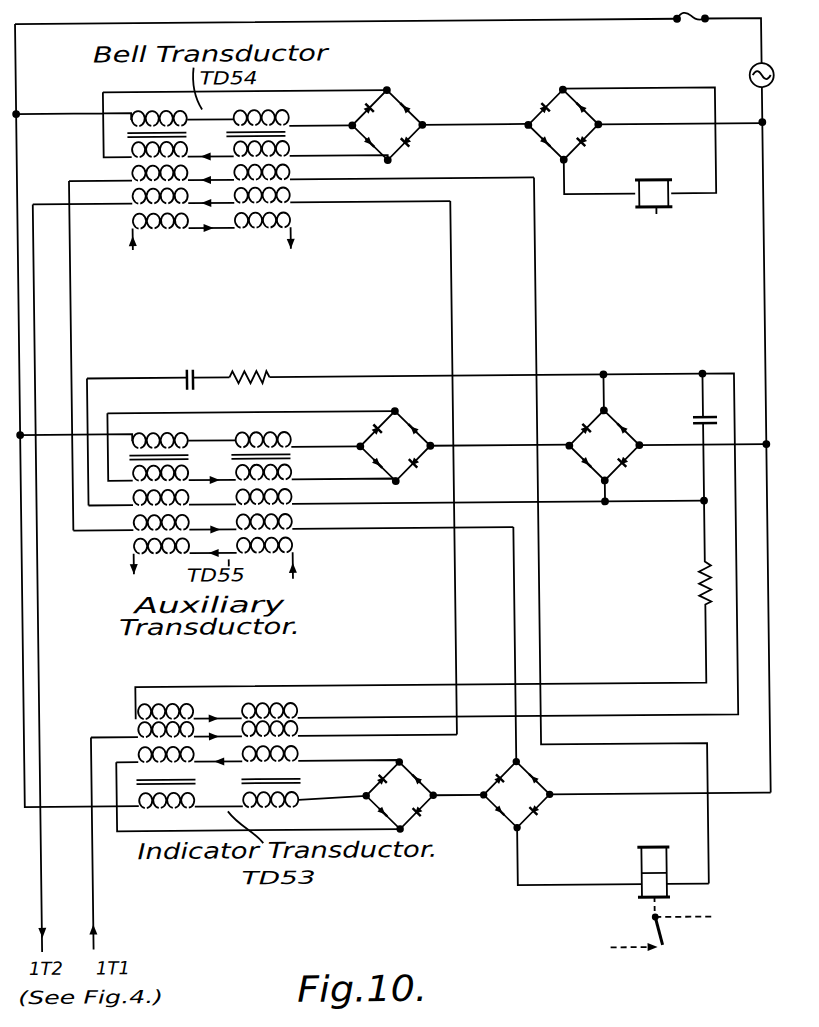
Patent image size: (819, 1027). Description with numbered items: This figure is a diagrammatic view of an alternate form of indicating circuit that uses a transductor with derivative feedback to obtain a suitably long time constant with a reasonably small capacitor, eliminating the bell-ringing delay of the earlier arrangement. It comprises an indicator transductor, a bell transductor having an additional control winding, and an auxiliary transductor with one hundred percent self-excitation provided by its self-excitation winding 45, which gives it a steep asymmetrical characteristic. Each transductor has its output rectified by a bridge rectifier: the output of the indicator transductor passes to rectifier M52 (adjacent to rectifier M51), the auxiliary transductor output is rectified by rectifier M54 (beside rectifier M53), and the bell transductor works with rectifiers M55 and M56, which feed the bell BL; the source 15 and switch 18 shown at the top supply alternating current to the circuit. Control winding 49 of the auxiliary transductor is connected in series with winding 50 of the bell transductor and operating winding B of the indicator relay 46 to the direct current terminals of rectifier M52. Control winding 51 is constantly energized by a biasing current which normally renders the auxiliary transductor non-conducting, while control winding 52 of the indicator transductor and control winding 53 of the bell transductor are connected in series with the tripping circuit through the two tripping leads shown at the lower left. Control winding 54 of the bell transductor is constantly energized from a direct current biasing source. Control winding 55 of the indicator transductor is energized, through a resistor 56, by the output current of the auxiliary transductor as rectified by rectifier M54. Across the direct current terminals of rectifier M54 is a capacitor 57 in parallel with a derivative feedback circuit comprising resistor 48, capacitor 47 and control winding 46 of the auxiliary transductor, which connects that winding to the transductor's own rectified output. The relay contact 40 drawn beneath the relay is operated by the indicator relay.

The switch 18 is at (686, 34).
The alternating current source 15 is at (755, 68).
The winding of the bell transductor 50 is at (139, 176).
The control winding of transductor TD54 53 is at (142, 200).
The control winding of the bell transductor 54 is at (157, 230).
The capacitor 47 is at (197, 368).
The resistor 48 is at (250, 372).
The self-excitation winding 45 is at (143, 479).
The control winding / indicator relay 46 is at (143, 504).
The control winding 49 is at (143, 529).
The control winding 51 is at (140, 549).
The capacitor 57 is at (702, 417).
The resistor 56 is at (702, 582).
The control winding of the indicator transductor 55 is at (136, 705).
The control winding of transductor TD53 52 is at (136, 730).
The switch 40 is at (648, 919).
The rectifier bridge M51 is at (414, 770).
The rectifier M52 is at (532, 769).
The rectifier bridge M53 is at (407, 420).
The rectifier M54 is at (612, 419).
The rectifier bridge M55 is at (403, 102).
The rectifier bridge M56 is at (563, 100).
The bell BL is at (661, 197).